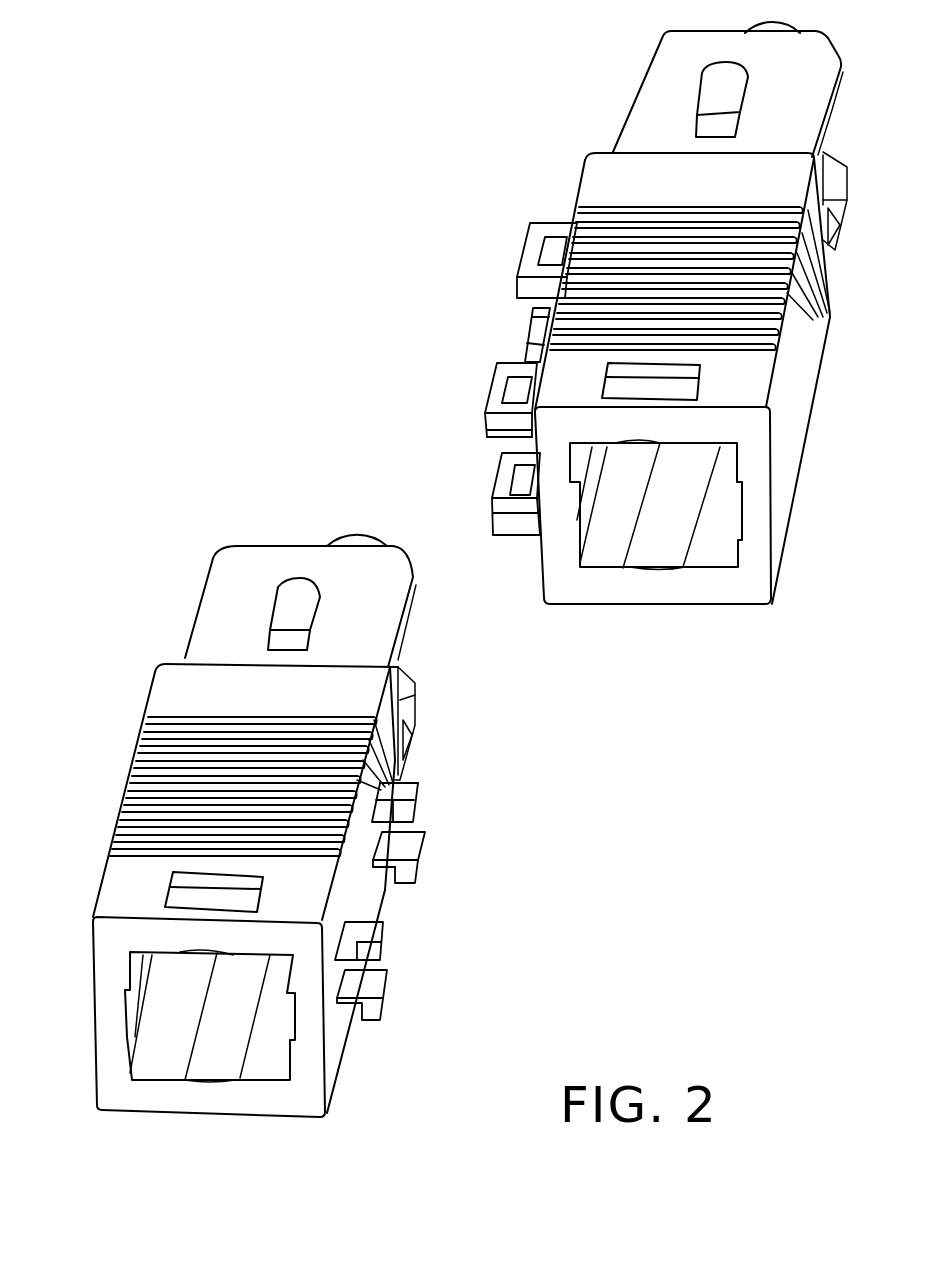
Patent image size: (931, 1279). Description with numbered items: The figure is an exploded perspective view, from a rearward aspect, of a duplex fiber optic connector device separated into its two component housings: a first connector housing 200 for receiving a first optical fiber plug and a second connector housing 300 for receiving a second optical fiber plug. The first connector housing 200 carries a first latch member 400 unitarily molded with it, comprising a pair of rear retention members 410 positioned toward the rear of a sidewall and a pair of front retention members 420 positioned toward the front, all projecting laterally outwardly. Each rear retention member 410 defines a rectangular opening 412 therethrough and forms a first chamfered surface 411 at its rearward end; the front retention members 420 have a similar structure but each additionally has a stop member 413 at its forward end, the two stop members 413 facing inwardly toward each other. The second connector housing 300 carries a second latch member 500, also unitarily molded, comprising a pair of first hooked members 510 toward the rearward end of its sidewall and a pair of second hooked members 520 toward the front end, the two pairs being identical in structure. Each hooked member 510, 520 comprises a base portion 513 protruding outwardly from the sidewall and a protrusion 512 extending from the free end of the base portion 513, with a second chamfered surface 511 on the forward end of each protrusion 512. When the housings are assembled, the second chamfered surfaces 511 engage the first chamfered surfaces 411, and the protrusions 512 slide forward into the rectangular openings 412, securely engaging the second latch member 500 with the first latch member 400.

The first connector housing 200 is at (655, 167).
The second connector housing 300 is at (205, 687).
The first latch member 400 is at (458, 361).
The rear retention member 410 is at (495, 403).
The first chamfered surface 411 is at (505, 435).
The rectangular opening 412 is at (488, 337).
The stop member 413 is at (543, 313).
The front retention member 420 is at (532, 250).
The second latch member 500 is at (460, 896).
The first hooked member 510 is at (411, 1004).
The second chamfered surface 511 is at (418, 785).
The protrusion 512 is at (370, 950).
The base portion 513 is at (388, 877).
The second hooked member 520 is at (415, 804).